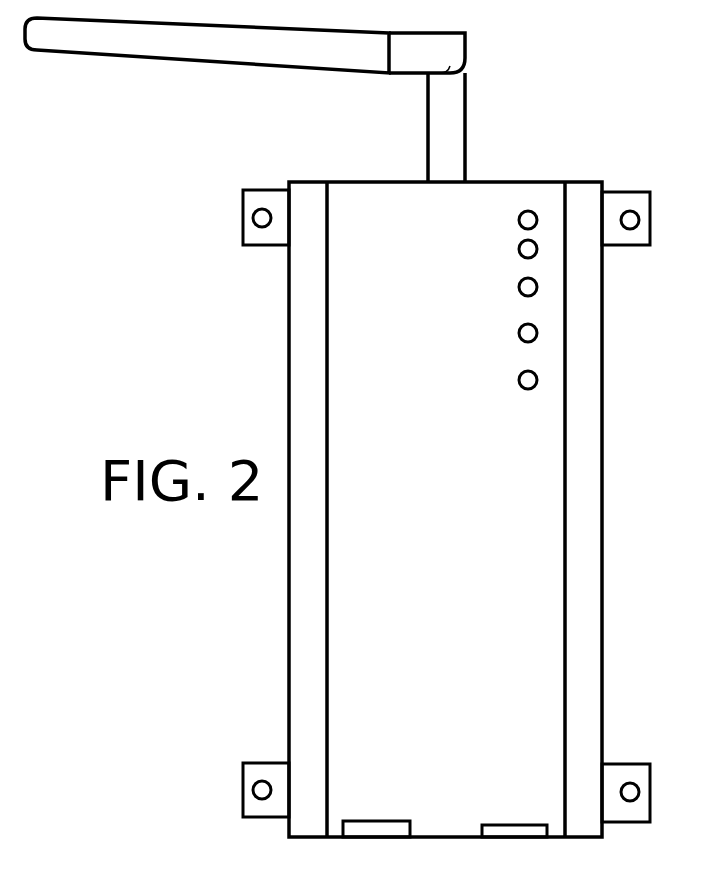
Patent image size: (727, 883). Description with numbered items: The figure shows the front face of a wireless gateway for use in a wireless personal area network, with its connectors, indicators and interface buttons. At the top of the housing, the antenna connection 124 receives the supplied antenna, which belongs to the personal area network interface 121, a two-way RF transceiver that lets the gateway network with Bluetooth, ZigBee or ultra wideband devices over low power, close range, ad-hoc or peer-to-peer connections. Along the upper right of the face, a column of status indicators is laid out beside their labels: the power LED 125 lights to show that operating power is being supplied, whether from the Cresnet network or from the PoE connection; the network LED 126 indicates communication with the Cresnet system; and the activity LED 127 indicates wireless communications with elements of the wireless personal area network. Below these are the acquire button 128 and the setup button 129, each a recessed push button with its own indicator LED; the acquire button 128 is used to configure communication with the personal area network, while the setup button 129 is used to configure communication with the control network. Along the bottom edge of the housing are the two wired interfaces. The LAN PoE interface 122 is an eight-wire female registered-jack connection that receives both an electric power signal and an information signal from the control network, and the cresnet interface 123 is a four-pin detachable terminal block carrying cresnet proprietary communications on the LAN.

The personal area network interface 121 is at (458, 97).
The LAN PoE interface 122 is at (374, 837).
The cresnet interface 123 is at (510, 835).
The antenna connection 124 is at (468, 180).
The power LED 125 is at (522, 212).
The network LED 126 is at (534, 243).
The activity LED 127 is at (535, 281).
The acquire button 128 is at (519, 333).
The setup button 129 is at (519, 379).